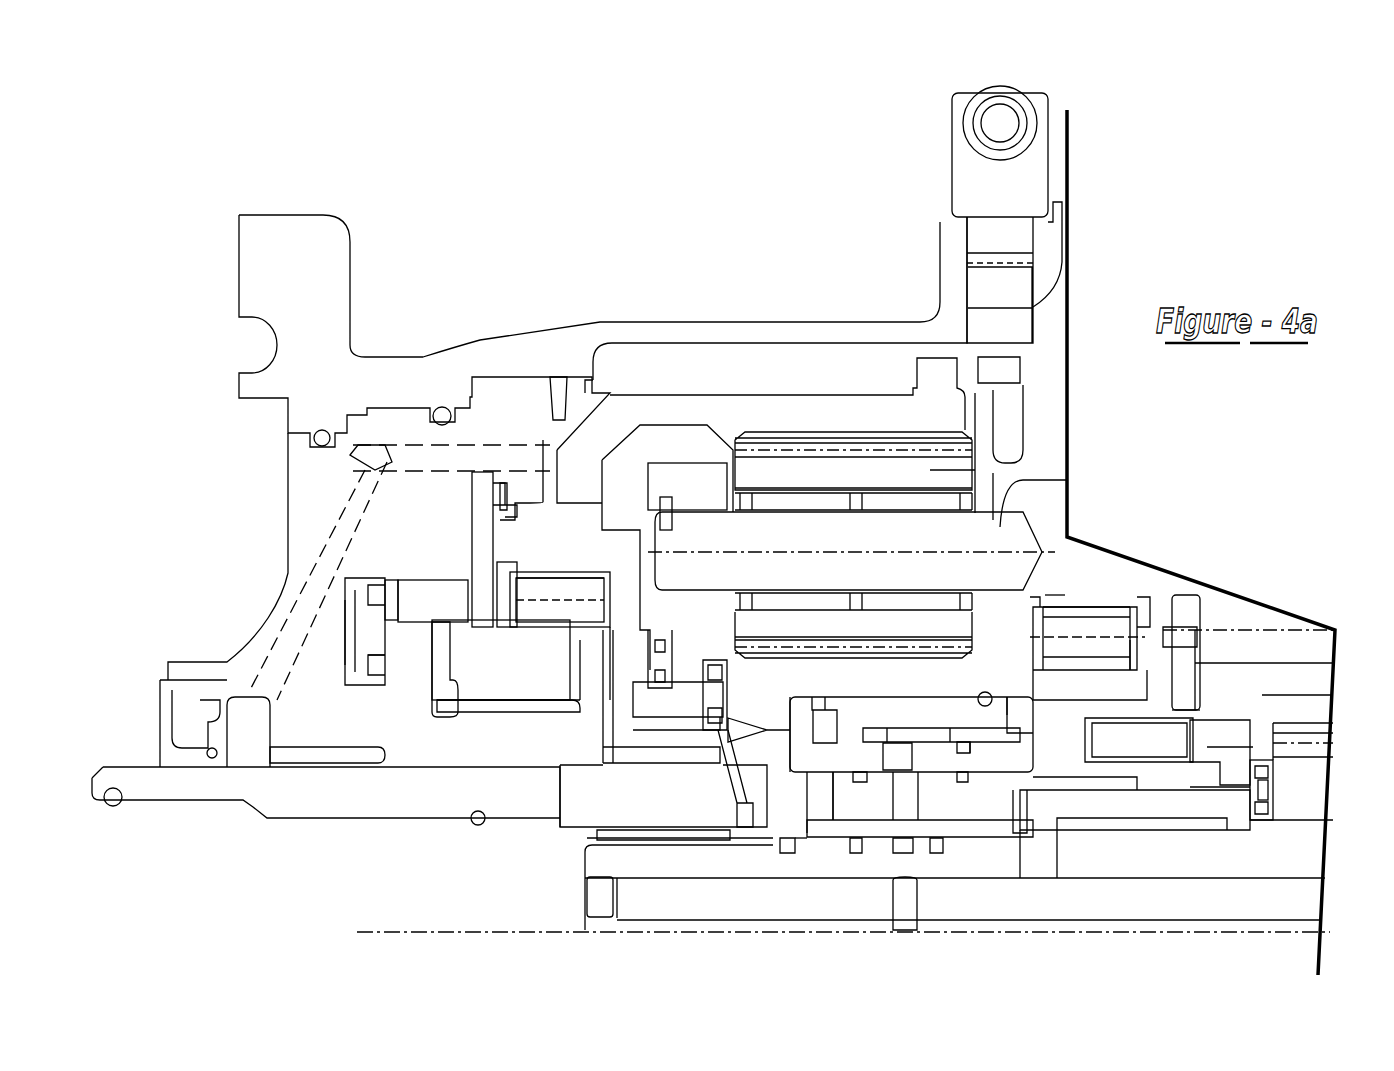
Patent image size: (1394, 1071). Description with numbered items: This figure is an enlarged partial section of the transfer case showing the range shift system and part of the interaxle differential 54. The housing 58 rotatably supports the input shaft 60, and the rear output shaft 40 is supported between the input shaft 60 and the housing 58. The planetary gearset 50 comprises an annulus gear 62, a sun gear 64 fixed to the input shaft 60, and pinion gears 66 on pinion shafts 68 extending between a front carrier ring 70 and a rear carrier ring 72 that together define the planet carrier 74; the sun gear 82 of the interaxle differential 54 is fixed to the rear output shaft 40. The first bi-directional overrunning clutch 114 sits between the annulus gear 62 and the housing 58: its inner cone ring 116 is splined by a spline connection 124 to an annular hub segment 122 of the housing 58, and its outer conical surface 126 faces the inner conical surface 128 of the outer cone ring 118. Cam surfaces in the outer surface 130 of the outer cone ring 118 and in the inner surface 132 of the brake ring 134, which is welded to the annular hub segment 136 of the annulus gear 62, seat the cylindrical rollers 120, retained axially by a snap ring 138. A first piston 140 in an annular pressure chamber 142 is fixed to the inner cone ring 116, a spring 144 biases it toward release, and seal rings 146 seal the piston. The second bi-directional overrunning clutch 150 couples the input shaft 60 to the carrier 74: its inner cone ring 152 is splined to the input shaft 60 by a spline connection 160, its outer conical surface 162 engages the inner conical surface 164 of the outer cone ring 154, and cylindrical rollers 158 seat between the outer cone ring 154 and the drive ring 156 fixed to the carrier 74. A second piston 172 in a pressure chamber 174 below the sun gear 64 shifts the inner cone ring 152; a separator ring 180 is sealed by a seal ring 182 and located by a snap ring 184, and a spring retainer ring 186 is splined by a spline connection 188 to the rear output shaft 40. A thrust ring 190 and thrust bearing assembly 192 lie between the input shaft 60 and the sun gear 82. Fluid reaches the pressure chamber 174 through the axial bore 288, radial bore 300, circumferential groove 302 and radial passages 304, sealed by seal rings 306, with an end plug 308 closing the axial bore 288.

The rear output shaft 40 is at (1127, 860).
The planetary gearset 50 is at (791, 370).
The interaxle differential 54 is at (1239, 598).
The housing 58 is at (325, 240).
The input shaft 60 is at (200, 790).
The annulus gear 62 is at (895, 412).
The sun gear 64 is at (747, 692).
The pinion gears 66 is at (950, 482).
The pinion shaft 68 is at (1067, 482).
The front carrier ring 70 is at (697, 487).
The rear carrier ring 72 is at (1003, 410).
The planet carrier 74 is at (1080, 560).
The sun gear 82 is at (1305, 788).
The first bi-directional overrunning clutch 114 is at (390, 712).
The inner cone ring 116 is at (475, 670).
The outer cone ring 118 is at (590, 680).
The cylindrical rollers 120 is at (568, 597).
The annular hub segment 122 is at (485, 725).
The spline connection 124 is at (523, 723).
The outer conical surface 126 is at (453, 620).
The inner conical surface 128 is at (590, 640).
The outer surface 130 is at (528, 613).
The inner surface 132 is at (540, 590).
The brake ring 134 is at (562, 573).
The annular hub segment 136 is at (503, 535).
The snap ring 138 is at (487, 620).
The first piston 140 is at (367, 628).
The annular pressure chamber 142 is at (357, 582).
The spring 144 is at (412, 587).
The seal rings 146 is at (377, 600).
The second bi-directional overrunning clutch 150 is at (1075, 812).
The inner cone ring 152 is at (1045, 660).
The outer cone ring 154 is at (1175, 720).
The drive ring 156 is at (1072, 607).
The cylindrical rollers 158 is at (1195, 645).
The spline connection 160 is at (1120, 780).
The outer conical surface 162 is at (1113, 650).
The inner conical surface 164 is at (1045, 600).
The second piston 172 is at (833, 762).
The pressure chamber 174 is at (790, 765).
The separator ring 180 is at (980, 727).
The seal ring 182 is at (983, 730).
The snap ring 184 is at (1005, 697).
The spring retainer ring 186 is at (1207, 747).
The spline connection 188 is at (1209, 787).
The thrust ring 190 is at (1243, 797).
The thrust bearing assembly 192 is at (1265, 788).
The axial bore 288 is at (700, 900).
The radial bore 300 is at (815, 880).
The circumferential groove 302 is at (795, 848).
The radial passages 304 is at (833, 815).
The seal rings 306 is at (777, 850).
The end plug 308 is at (613, 897).